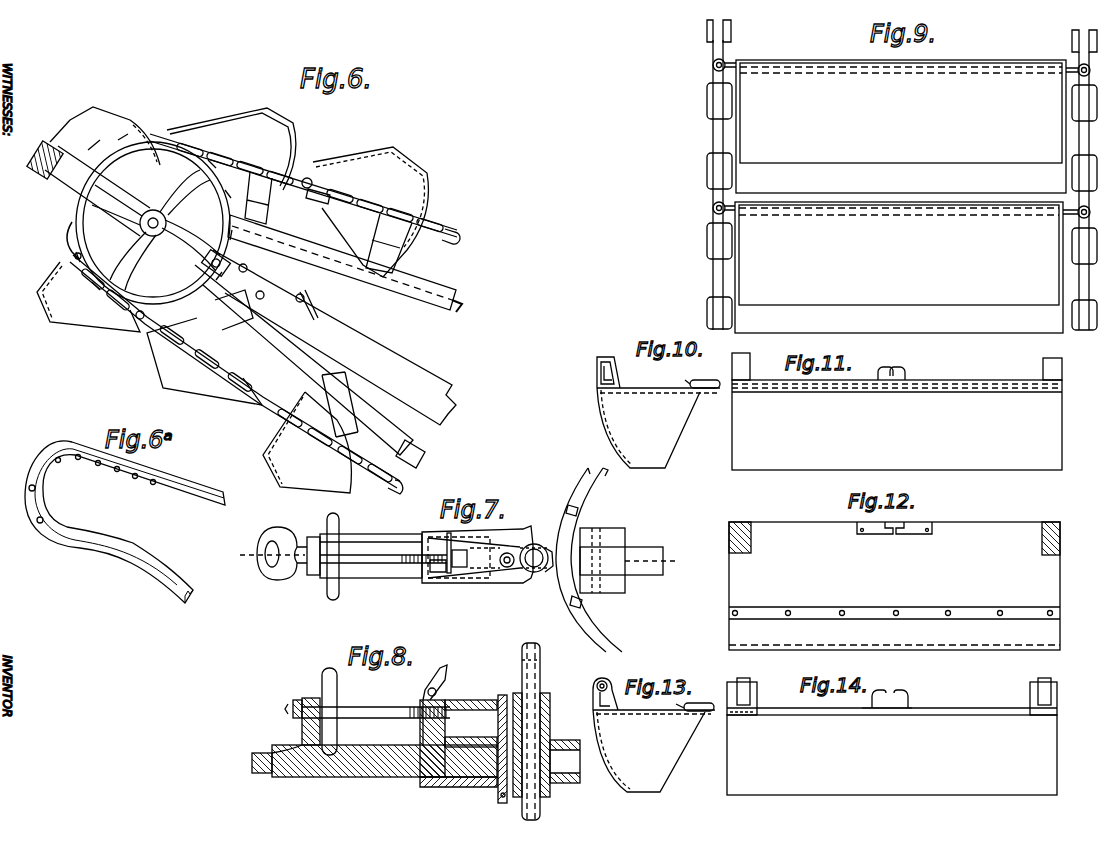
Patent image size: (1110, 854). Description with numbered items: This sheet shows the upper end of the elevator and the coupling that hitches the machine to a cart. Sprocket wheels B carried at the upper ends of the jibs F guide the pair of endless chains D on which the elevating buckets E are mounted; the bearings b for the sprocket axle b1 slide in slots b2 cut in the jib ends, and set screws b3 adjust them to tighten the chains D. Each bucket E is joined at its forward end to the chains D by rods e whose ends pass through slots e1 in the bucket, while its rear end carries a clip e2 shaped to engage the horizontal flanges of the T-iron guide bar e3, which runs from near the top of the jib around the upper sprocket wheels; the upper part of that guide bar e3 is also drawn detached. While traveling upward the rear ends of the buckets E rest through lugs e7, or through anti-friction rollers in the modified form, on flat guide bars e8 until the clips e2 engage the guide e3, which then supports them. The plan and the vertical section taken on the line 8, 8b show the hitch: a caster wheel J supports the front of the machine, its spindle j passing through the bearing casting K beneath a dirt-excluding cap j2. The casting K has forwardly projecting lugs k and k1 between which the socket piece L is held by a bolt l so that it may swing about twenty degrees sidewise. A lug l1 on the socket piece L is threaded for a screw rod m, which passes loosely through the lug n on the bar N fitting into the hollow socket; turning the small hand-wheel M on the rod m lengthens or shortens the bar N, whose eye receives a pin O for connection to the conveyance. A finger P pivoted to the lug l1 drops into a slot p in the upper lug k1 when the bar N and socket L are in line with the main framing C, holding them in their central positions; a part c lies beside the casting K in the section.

In FIG. 6, the sprocket wheel B is at (190, 302).
In FIG. 6, the bearings b is at (212, 275).
In FIG. 6, the axle b1 is at (246, 264).
In FIG. 6, the slots b2 is at (45, 183).
In FIG. 6, the set screws b3 is at (280, 285).
In FIG. 6, the endless chains D is at (305, 448).
In FIG. 9, the endless chains D is at (695, 262).
In FIG. 6, the elevating buckets E is at (232, 300).
In FIG. 9, the elevating buckets E is at (900, 196).
In FIG. 10, the elevating buckets E is at (658, 428).
In FIG. 11, the elevating buckets E is at (897, 425).
In FIG. 12, the elevating buckets E is at (894, 586).
In FIG. 13, the elevating buckets E is at (654, 751).
In FIG. 14, the elevating buckets E is at (892, 751).
In FIG. 6, the rods or bars e is at (309, 178).
In FIG. 9, the rods or bars e is at (732, 64).
In FIG. 6, the slots e1 is at (318, 201).
In FIG. 10, the slots e1 is at (698, 388).
In FIG. 11, the slots e1 is at (782, 392).
In FIG. 12, the slots e1 is at (815, 612).
In FIG. 13, the slots e1 is at (694, 711).
In FIG. 6, the clip e2 is at (395, 258).
In FIG. 10, the clip e2 is at (614, 370).
In FIG. 11, the clip e2 is at (922, 372).
In FIG. 12, the clip e2 is at (908, 535).
In FIG. 13, the clip e2 is at (600, 698).
In FIG. 14, the clip e2 is at (922, 694).
In FIG. 6, the T iron guide bar e3 is at (292, 358).
In FIG. 6a, the T iron guide bar e3 is at (165, 547).
In FIG. 6, the lugs e7 is at (346, 378).
In FIG. 10, the lugs e7 is at (604, 358).
In FIG. 11, the lugs e7 is at (750, 360).
In FIG. 12, the lugs e7 is at (752, 544).
In FIG. 13, the lugs e7 is at (594, 684).
In FIG. 14, the lugs e7 is at (757, 696).
In FIG. 6, the flat guide bars e8 is at (355, 263).
In FIG. 6, the jibs F is at (334, 337).
In FIG. 7, the section line 8 is at (267, 556).
In FIG. 7, the shaft axis 8b is at (656, 561).
In FIG. 7, the pin O is at (290, 582).
In FIG. 8, the pin O is at (277, 751).
In FIG. 7, the lug n is at (312, 576).
In FIG. 8, the lug n is at (306, 696).
In FIG. 7, the rod or bar N is at (400, 536).
In FIG. 7, the hand-wheel M is at (338, 582).
In FIG. 8, the hand-wheel M is at (338, 680).
In FIG. 7, the screw threaded rod m is at (388, 566).
In FIG. 8, the screw threaded rod m is at (376, 704).
In FIG. 7, the socket piece L is at (445, 585).
In FIG. 8, the socket piece L is at (455, 788).
In FIG. 7, the lug l1 is at (444, 553).
In FIG. 8, the lug l1 is at (423, 700).
In FIG. 7, the finger P is at (458, 568).
In FIG. 8, the finger P is at (447, 668).
In FIG. 8, the slot p is at (455, 702).
In FIG. 7, the upper lug k1 is at (480, 585).
In FIG. 8, the upper lug k1 is at (485, 700).
In FIG. 8, the lug k is at (497, 790).
In FIG. 7, the bolt l is at (504, 568).
In FIG. 8, the bolt l is at (500, 798).
In FIG. 7, the spindle j is at (535, 545).
In FIG. 8, the spindle j is at (540, 800).
In FIG. 7, the cap j2 is at (524, 570).
In FIG. 8, the cap j2 is at (541, 660).
In FIG. 7, the casting K is at (548, 574).
In FIG. 8, the casting K is at (550, 722).
In FIG. 7, the main framing C is at (612, 495).
In FIG. 7, the caster wheel J is at (640, 578).
In FIG. 8, the plate c is at (565, 761).